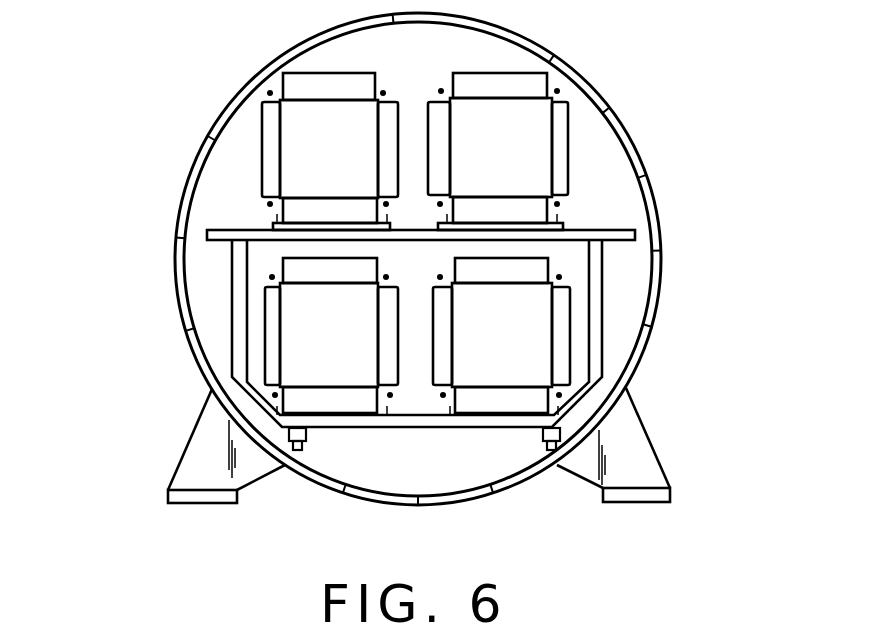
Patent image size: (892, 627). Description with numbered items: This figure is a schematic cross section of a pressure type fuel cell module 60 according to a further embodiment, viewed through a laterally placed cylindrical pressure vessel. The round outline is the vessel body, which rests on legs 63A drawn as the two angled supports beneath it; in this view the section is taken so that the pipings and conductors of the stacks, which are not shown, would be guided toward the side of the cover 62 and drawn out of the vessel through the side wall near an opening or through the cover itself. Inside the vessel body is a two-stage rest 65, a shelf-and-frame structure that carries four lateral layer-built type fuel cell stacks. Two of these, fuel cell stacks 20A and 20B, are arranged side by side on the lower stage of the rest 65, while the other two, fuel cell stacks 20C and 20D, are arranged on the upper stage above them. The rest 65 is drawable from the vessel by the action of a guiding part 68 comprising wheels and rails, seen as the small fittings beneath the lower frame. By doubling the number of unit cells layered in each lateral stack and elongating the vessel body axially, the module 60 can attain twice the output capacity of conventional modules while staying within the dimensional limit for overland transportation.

The pressure type fuel cell module 60 is at (180, 190).
The cover 62 is at (661, 200).
The two-stage rest 65 is at (598, 263).
The lateral layer-built type fuel cell stack 20A is at (295, 345).
The lateral layer-built type fuel cell stack 20B is at (538, 343).
The lateral layer-built type fuel cell stack 20C is at (295, 122).
The lateral layer-built type fuel cell stack 20D is at (535, 117).
The guiding part 68 is at (304, 445).
The legs 63A is at (645, 468).